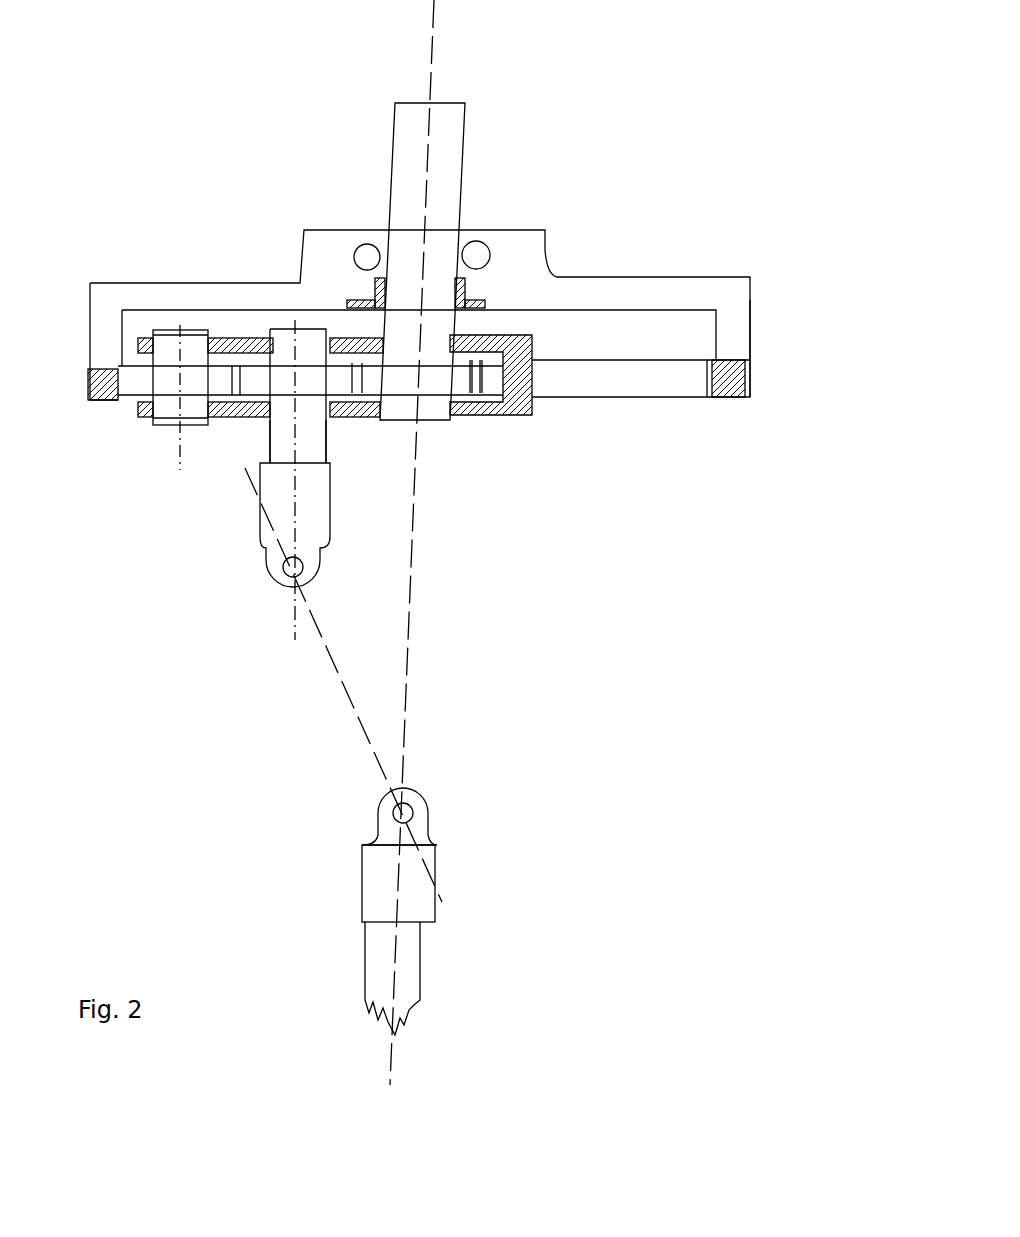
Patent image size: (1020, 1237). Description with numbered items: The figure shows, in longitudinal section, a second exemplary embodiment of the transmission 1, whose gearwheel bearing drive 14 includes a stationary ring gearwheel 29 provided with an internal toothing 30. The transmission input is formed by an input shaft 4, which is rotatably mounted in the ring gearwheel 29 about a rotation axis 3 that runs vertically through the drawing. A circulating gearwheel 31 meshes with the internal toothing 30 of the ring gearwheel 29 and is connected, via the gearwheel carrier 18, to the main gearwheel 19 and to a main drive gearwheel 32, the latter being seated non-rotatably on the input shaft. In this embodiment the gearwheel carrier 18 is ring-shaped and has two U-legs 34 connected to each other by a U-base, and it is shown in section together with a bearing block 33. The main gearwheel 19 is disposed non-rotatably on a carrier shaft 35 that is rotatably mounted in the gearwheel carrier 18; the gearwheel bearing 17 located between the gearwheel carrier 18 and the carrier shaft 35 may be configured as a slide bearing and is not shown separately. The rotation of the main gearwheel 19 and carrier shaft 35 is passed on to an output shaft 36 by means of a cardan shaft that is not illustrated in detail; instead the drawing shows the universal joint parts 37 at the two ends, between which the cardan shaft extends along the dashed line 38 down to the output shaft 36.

The weighing/carrier device 1 is at (633, 168).
The rotation axis 3 is at (433, 66).
The input shaft 4 is at (462, 168).
The gearwheel bearing drive 14 is at (705, 277).
The gearwheel bearing 17 is at (280, 330).
The gearwheel carrier 18 is at (257, 387).
The main gearwheel 19 is at (208, 420).
The ring gearwheel 29 is at (751, 337).
The internal toothing 30 is at (703, 390).
The circulating gearwheel 31 is at (122, 402).
The main drive gearwheel 32 is at (470, 393).
The bearing block 33 is at (535, 380).
The U-legs 34 is at (237, 337).
The carrier shaft 35 is at (327, 445).
The output shaft 36 is at (421, 965).
The universal joint parts 37 is at (330, 523).
The dashed line 38 is at (352, 698).